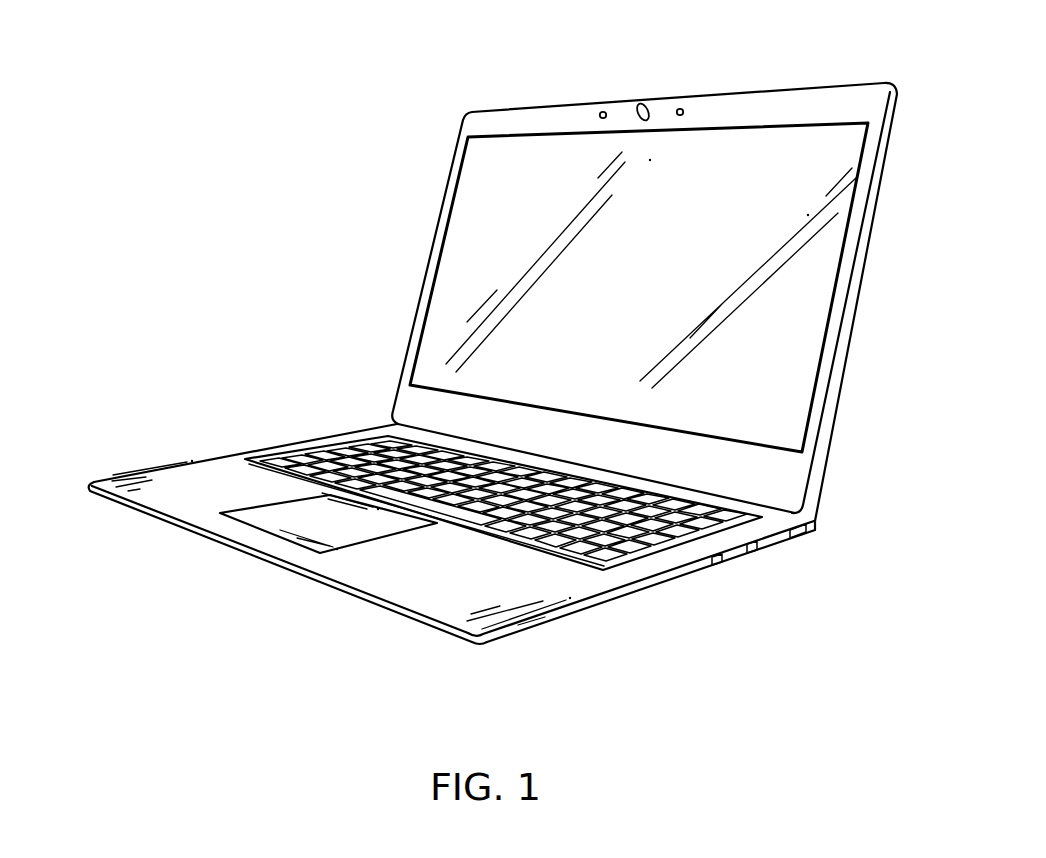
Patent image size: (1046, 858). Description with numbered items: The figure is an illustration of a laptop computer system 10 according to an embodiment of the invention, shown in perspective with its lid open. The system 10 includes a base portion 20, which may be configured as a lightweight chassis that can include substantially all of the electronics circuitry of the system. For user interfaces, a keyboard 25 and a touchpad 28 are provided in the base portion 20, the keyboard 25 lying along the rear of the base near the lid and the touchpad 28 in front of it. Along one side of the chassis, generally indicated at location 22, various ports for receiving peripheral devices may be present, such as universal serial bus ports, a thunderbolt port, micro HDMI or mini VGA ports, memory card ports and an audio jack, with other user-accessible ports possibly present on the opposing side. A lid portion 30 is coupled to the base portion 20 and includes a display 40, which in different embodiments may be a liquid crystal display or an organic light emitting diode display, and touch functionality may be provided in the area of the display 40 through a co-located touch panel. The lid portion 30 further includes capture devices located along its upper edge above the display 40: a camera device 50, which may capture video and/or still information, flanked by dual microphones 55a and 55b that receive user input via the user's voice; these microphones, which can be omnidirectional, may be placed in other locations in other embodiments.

The system 10 is at (466, 51).
The base portion 20 is at (248, 451).
The location of ports 22 is at (776, 546).
The keyboard 25 is at (313, 453).
The touchpad 28 is at (319, 527).
The lid portion 30 is at (427, 264).
The display 40 is at (636, 286).
The camera device 50 is at (648, 103).
The microphone 55a is at (603, 111).
The microphone 55b is at (681, 107).